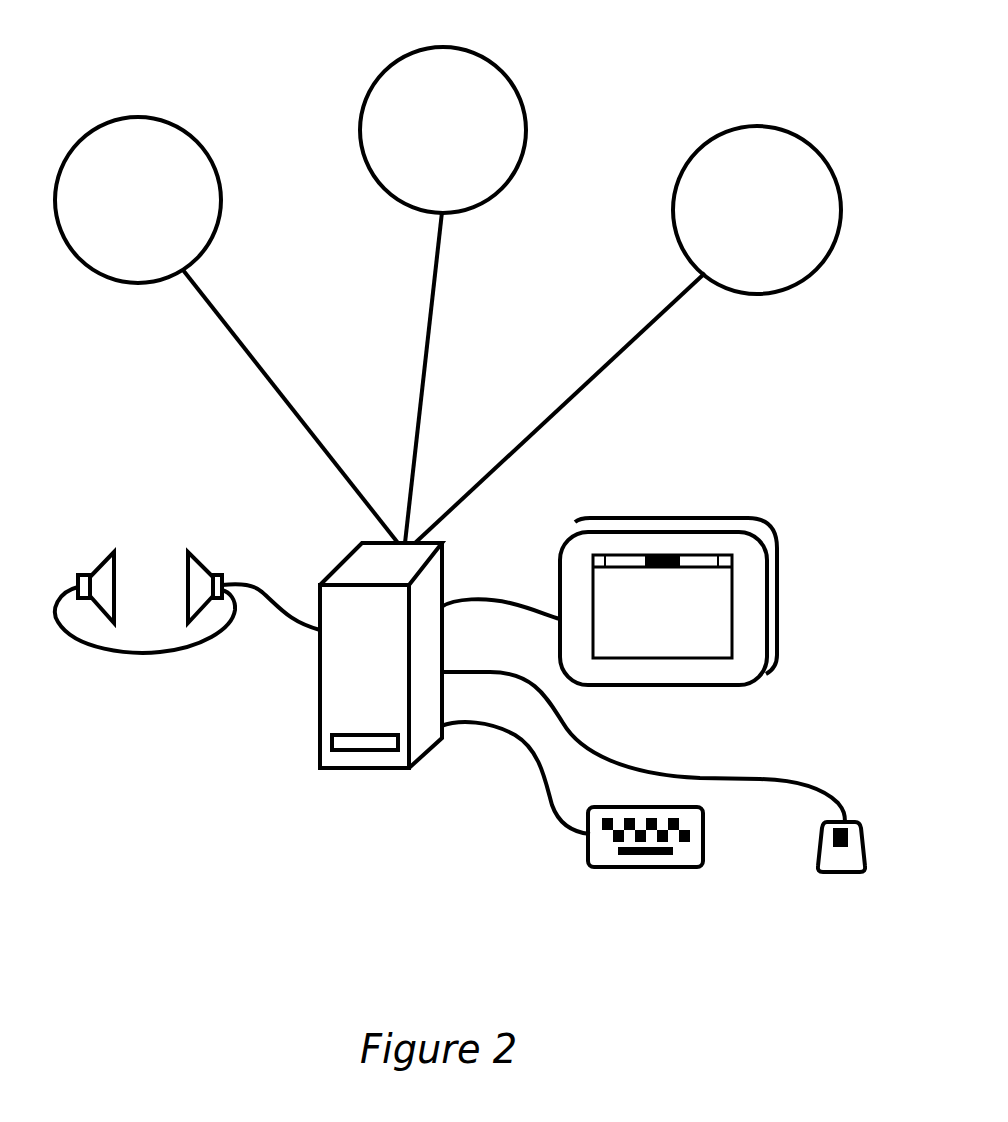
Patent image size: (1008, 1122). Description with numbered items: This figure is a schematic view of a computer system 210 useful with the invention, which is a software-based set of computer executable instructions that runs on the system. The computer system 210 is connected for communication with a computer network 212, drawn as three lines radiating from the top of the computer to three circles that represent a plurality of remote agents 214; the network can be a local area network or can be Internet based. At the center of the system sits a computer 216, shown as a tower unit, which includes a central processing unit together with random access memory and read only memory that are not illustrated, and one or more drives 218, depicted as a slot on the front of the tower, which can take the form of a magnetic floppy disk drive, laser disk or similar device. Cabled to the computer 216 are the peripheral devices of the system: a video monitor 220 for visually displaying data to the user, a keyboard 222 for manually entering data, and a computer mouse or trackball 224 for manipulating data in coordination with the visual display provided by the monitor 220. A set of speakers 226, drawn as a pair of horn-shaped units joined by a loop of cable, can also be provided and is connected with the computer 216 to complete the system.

The computer system 210 is at (263, 782).
The computer network 212 is at (467, 286).
The remote agents 214 is at (173, 133).
The computer 216 is at (321, 690).
The drives 218 is at (388, 745).
The video monitor 220 is at (752, 565).
The keyboard 222 is at (607, 857).
The computer mouse or trackball 224 is at (838, 863).
The speakers 226 is at (102, 550).